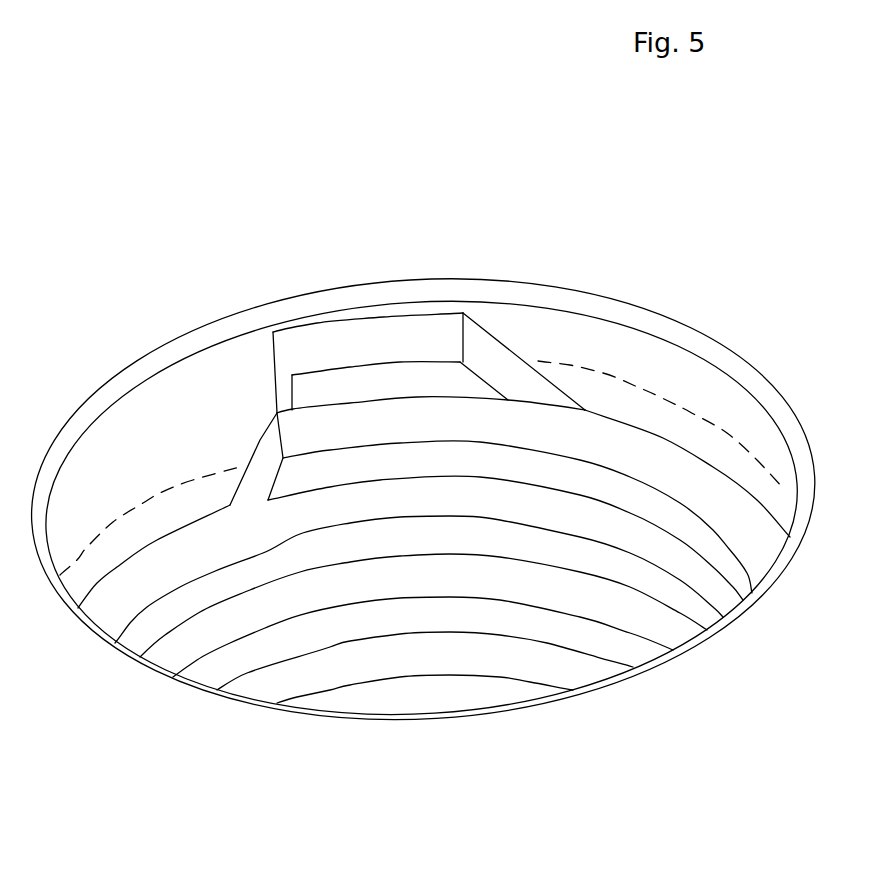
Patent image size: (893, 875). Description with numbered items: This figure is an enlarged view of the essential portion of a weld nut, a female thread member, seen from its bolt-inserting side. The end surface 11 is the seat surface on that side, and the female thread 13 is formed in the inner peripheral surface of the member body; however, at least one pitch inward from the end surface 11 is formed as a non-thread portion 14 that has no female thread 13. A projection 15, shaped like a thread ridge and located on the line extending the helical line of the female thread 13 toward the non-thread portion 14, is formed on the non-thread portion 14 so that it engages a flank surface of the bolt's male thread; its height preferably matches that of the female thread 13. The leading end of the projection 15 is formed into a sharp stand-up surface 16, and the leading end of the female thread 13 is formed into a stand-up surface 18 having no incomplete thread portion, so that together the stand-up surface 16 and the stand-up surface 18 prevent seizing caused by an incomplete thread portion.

The end surface 11 is at (605, 760).
The female thread 13 is at (648, 457).
The non-thread portion 14 is at (563, 347).
The projection 15 is at (383, 337).
The stand-up surface 16 is at (280, 387).
The stand-up surface 18 is at (265, 455).